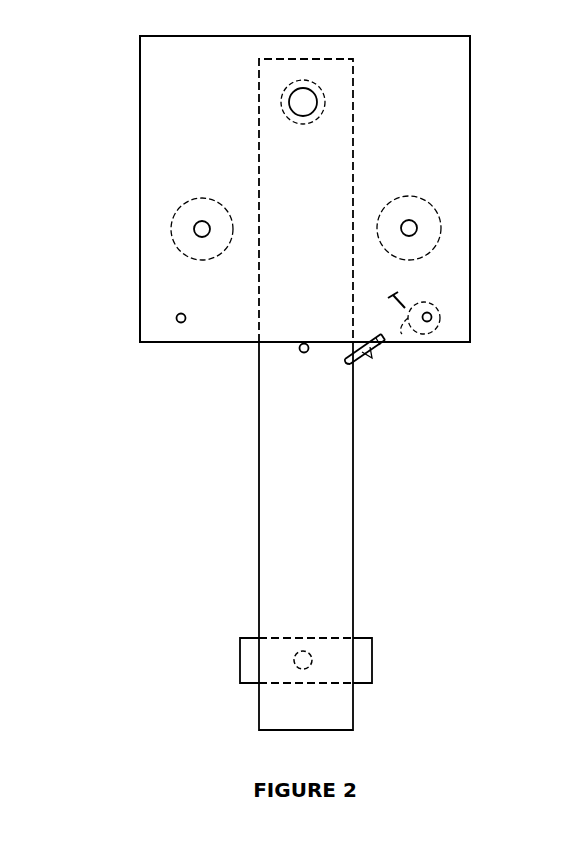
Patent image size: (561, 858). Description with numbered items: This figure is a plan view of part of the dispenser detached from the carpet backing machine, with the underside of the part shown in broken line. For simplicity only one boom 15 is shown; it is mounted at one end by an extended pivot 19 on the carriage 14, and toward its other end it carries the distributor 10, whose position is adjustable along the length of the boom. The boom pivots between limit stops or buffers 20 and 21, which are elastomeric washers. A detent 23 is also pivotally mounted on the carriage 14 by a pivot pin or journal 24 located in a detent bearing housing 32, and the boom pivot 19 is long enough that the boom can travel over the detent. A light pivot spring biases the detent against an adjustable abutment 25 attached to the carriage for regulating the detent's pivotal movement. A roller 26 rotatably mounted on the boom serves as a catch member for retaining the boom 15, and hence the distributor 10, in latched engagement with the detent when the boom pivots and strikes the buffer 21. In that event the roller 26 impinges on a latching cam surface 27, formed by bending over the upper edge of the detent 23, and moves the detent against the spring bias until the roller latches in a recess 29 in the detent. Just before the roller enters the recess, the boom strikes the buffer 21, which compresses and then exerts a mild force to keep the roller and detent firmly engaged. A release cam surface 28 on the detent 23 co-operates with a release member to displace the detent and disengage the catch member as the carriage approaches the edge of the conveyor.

The distributor 10 is at (252, 661).
The carriage 14 is at (447, 135).
The boom 15 is at (280, 513).
The extended pivot 19 is at (303, 102).
The buffer 20 is at (202, 229).
The buffer 21 is at (409, 228).
The detent 23 is at (425, 333).
The pivot pin 24 is at (431, 317).
The adjustable abutment 25 is at (398, 292).
The roller 26 is at (301, 351).
The latching cam surface 27 is at (387, 343).
The release cam surface 28 is at (367, 352).
The recess 29 is at (400, 343).
The detent bearing housing 32 is at (177, 317).